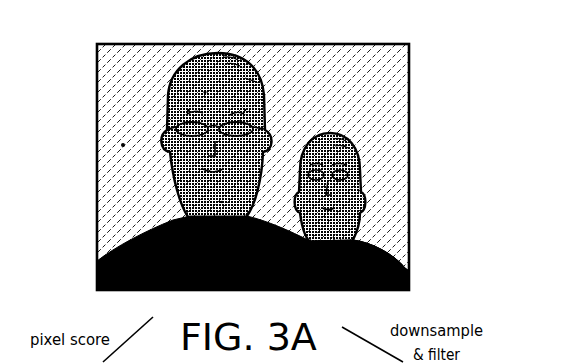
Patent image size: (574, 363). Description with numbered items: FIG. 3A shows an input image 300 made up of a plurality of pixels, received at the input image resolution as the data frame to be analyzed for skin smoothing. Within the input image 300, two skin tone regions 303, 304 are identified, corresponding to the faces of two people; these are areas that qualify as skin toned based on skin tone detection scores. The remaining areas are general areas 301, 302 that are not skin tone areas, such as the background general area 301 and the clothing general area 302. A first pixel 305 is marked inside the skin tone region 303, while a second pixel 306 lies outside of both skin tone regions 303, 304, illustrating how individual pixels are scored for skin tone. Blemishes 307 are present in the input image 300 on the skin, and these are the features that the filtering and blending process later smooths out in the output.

The input image 300 is at (146, 88).
The general area 301 is at (100, 262).
The general area 302 is at (398, 257).
The skin tone region 303 is at (240, 103).
The skin tone region 304 is at (345, 157).
The first pixel 305 is at (205, 92).
The second pixel 306 is at (123, 145).
The blemishes 307 is at (340, 237).